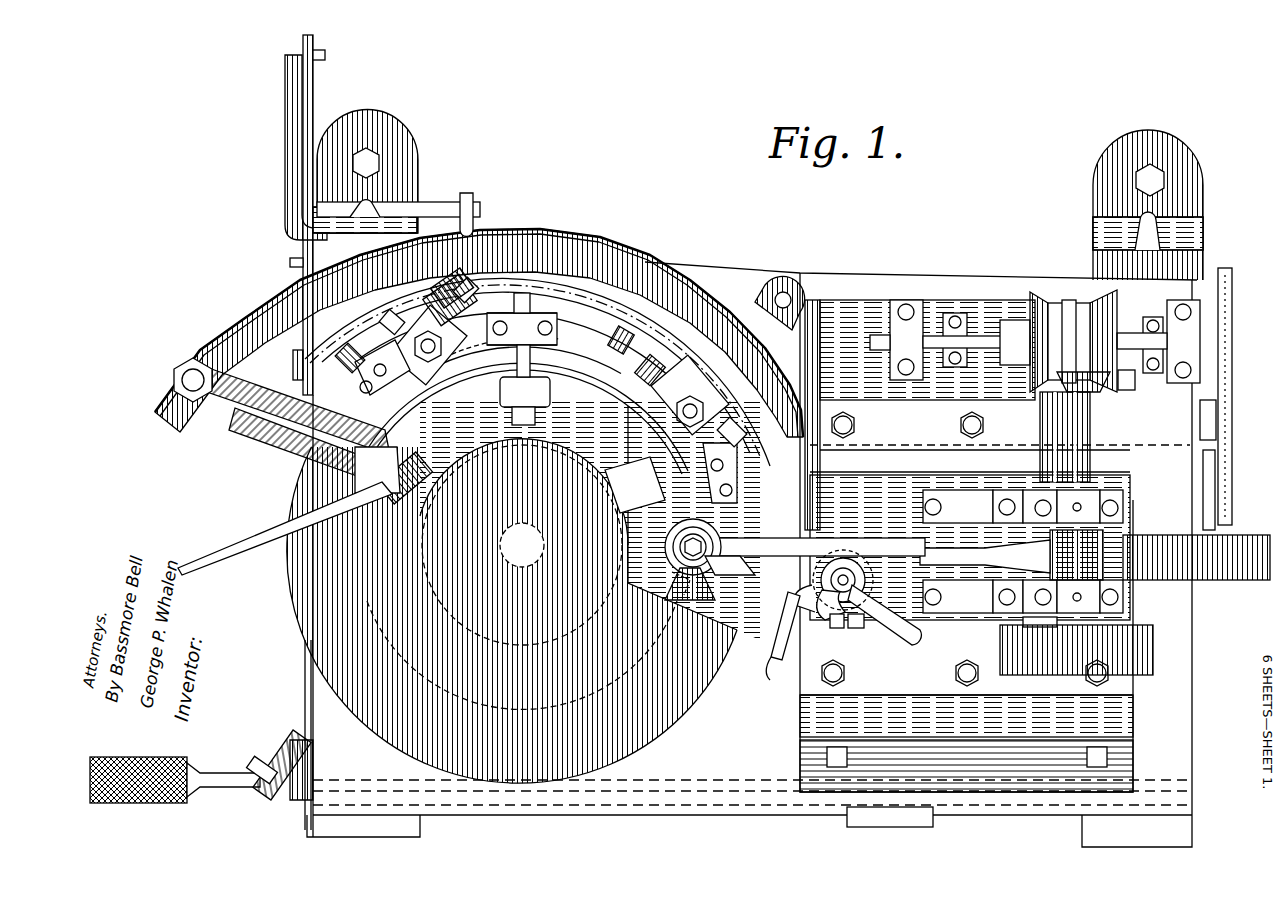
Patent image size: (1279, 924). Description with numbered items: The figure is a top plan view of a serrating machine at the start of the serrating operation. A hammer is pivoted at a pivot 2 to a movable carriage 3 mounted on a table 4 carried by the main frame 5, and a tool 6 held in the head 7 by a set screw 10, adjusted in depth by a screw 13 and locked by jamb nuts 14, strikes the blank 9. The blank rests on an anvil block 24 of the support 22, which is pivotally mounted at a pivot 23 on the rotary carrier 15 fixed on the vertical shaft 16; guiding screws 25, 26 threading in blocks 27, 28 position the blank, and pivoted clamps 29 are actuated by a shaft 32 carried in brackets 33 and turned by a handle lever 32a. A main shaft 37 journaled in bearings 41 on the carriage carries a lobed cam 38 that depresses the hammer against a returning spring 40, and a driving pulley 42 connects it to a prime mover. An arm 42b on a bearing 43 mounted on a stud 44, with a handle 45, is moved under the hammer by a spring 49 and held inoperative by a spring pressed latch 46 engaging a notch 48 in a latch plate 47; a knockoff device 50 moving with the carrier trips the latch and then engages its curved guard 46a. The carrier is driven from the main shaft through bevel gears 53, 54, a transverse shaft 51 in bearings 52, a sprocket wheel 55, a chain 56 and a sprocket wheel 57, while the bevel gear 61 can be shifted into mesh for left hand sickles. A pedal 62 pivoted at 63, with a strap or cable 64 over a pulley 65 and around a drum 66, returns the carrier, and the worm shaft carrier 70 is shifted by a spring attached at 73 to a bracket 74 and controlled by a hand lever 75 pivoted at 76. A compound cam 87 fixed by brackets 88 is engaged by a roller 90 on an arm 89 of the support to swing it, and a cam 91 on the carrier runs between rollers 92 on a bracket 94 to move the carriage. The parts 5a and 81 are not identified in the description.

The pivot 2 is at (985, 556).
The movable carriage 3 is at (975, 477).
The table 4 is at (1135, 440).
The main frame 5 is at (1185, 635).
The block 5a is at (344, 351).
The tool 6 is at (420, 312).
The head 7 is at (672, 560).
The blank 9 is at (660, 448).
The set screw 10 is at (535, 369).
The screw 13 is at (668, 550).
The jamb nuts 14 is at (667, 581).
The carrier 15 is at (726, 664).
The vertical shaft 16 is at (522, 545).
The support 22 is at (634, 465).
The pivot 23 is at (519, 357).
The anvil block 24 is at (624, 345).
The screw 25 is at (535, 420).
The screw 26 is at (522, 292).
The block 27 is at (535, 329).
The block 28 is at (525, 376).
The pivoted clamps 29 is at (546, 421).
The shaft 32 is at (400, 345).
The handle lever 32a is at (470, 285).
The brackets 33 is at (569, 349).
The main shaft 37 is at (1062, 434).
The cam 38 is at (1076, 555).
The returning spring 40 is at (1196, 557).
The bearings 41 is at (1045, 490).
The driving pulley 42 is at (1076, 650).
The arm 42b is at (838, 552).
The bearing 43 is at (865, 575).
The stud 44 is at (862, 590).
The handle 45 is at (905, 640).
The spring pressed latch 46 is at (788, 622).
The curved guard 46a is at (772, 678).
The latch plate 47 is at (835, 628).
The notch 48 is at (856, 628).
The spring 49 is at (860, 565).
The knockoff device 50 is at (384, 323).
The shaft 51 is at (972, 336).
The bearings 52 is at (897, 310).
The bevel gear 53 is at (1060, 384).
The bevel gear 54 is at (1127, 384).
The sprocket wheel 55 is at (1226, 275).
The chain 56 is at (1212, 408).
The sprocket wheel 57 is at (1210, 508).
The bevel gear 61 is at (1037, 295).
The pedal 62 is at (142, 757).
The pivot 63 is at (890, 827).
The strap or cable 64 is at (287, 737).
The pulley 65 is at (255, 765).
The drum 66 is at (522, 577).
The carrier 70 is at (296, 362).
The spring connection 73 is at (476, 226).
The bracket 74 is at (432, 203).
The hand lever 75 is at (302, 240).
The pivot 76 is at (290, 262).
The strip 81 is at (305, 680).
The cam 87 is at (608, 250).
The brackets 88 is at (760, 300).
The arm 89 is at (289, 464).
The roller or wiper 90 is at (172, 378).
The cam 91 is at (660, 345).
The rollers 92 is at (778, 537).
The bracket 94 is at (730, 569).